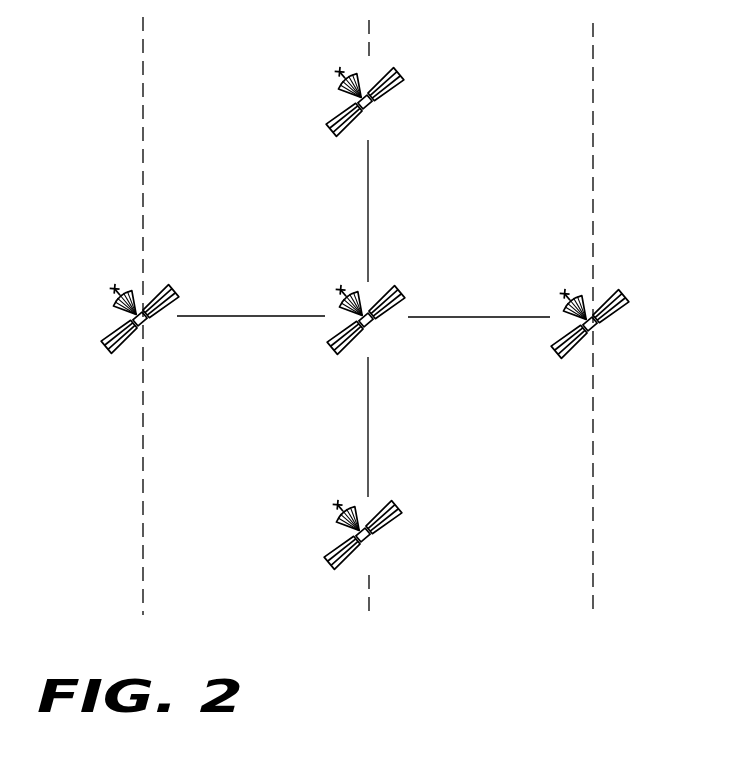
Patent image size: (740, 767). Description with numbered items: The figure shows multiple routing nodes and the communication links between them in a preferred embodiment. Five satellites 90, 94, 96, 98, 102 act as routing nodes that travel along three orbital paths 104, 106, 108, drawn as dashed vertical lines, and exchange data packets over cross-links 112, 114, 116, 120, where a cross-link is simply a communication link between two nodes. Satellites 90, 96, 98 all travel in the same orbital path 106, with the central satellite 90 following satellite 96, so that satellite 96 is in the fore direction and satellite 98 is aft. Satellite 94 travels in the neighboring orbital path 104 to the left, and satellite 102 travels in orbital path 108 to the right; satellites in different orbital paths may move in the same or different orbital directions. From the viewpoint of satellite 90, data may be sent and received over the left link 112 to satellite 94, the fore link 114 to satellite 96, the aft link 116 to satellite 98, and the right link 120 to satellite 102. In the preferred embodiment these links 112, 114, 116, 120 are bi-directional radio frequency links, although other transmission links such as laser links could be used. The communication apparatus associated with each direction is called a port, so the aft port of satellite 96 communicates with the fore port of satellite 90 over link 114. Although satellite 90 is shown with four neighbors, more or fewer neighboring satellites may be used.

The satellite 90 is at (402, 292).
The satellite 94 is at (105, 322).
The satellite 96 is at (402, 70).
The satellite 98 is at (402, 505).
The satellite 102 is at (630, 286).
The orbital path 104 is at (143, 136).
The orbital path 106 is at (369, 42).
The orbital path 108 is at (596, 142).
The cross-link 112 is at (254, 314).
The cross-link 114 is at (368, 202).
The cross-link 116 is at (368, 418).
The cross-link 120 is at (488, 318).